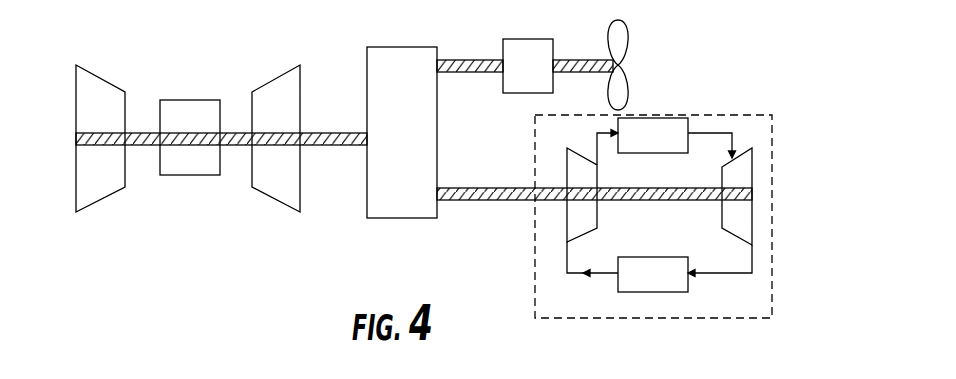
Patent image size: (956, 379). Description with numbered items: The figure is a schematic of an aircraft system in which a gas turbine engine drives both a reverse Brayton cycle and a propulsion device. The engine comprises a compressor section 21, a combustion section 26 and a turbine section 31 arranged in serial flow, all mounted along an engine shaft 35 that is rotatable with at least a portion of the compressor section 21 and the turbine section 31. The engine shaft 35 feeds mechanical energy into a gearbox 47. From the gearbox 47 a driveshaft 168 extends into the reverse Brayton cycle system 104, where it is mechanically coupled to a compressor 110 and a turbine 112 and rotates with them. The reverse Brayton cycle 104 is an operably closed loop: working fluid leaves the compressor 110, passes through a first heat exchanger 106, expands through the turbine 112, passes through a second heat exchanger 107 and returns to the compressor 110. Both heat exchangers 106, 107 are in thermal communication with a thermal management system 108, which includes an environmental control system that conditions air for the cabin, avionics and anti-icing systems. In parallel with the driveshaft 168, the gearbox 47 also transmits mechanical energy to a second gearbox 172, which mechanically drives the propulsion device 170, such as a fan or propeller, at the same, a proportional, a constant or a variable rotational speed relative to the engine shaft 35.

The compressor section 21 is at (92, 97).
The combustion section 26 is at (188, 108).
The turbine section 31 is at (278, 87).
The engine shaft 35 is at (240, 147).
The gearbox 47 is at (389, 144).
The reverse Brayton cycle system 104 is at (693, 103).
The first heat exchanger 106 is at (637, 150).
The second heat exchanger 107 is at (637, 288).
The thermal management system 108 is at (722, 313).
The compressor 110 is at (565, 217).
The turbine 112 is at (743, 168).
The driveshaft 168 is at (460, 197).
The propulsion device 170 is at (629, 31).
The second gearbox 172 is at (528, 50).